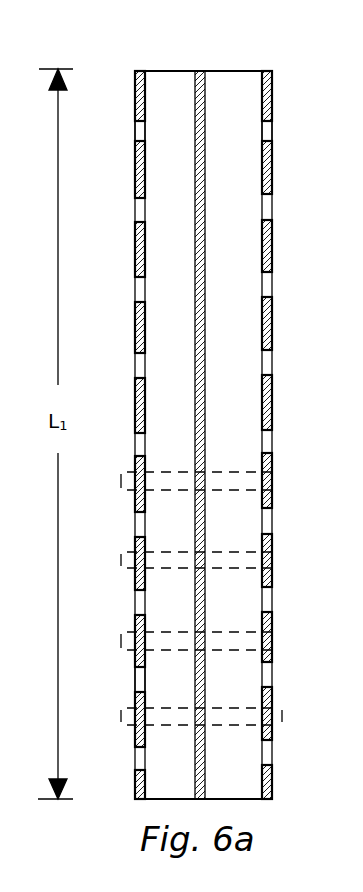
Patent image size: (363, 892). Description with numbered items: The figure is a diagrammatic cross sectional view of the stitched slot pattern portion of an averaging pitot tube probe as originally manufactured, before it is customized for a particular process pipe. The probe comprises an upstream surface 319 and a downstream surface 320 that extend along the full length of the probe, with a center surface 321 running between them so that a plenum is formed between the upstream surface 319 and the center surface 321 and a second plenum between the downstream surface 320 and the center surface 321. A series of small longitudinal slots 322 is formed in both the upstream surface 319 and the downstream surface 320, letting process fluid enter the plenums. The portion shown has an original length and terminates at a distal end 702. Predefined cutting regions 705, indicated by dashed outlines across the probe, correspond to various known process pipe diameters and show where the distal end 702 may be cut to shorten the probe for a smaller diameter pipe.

The upstream surface 319 is at (135, 82).
The downstream surface 320 is at (272, 82).
The center surface 321 is at (205, 100).
The slots 322 is at (272, 137).
The cutting regions 705 is at (282, 487).
The distal end 702 is at (230, 799).